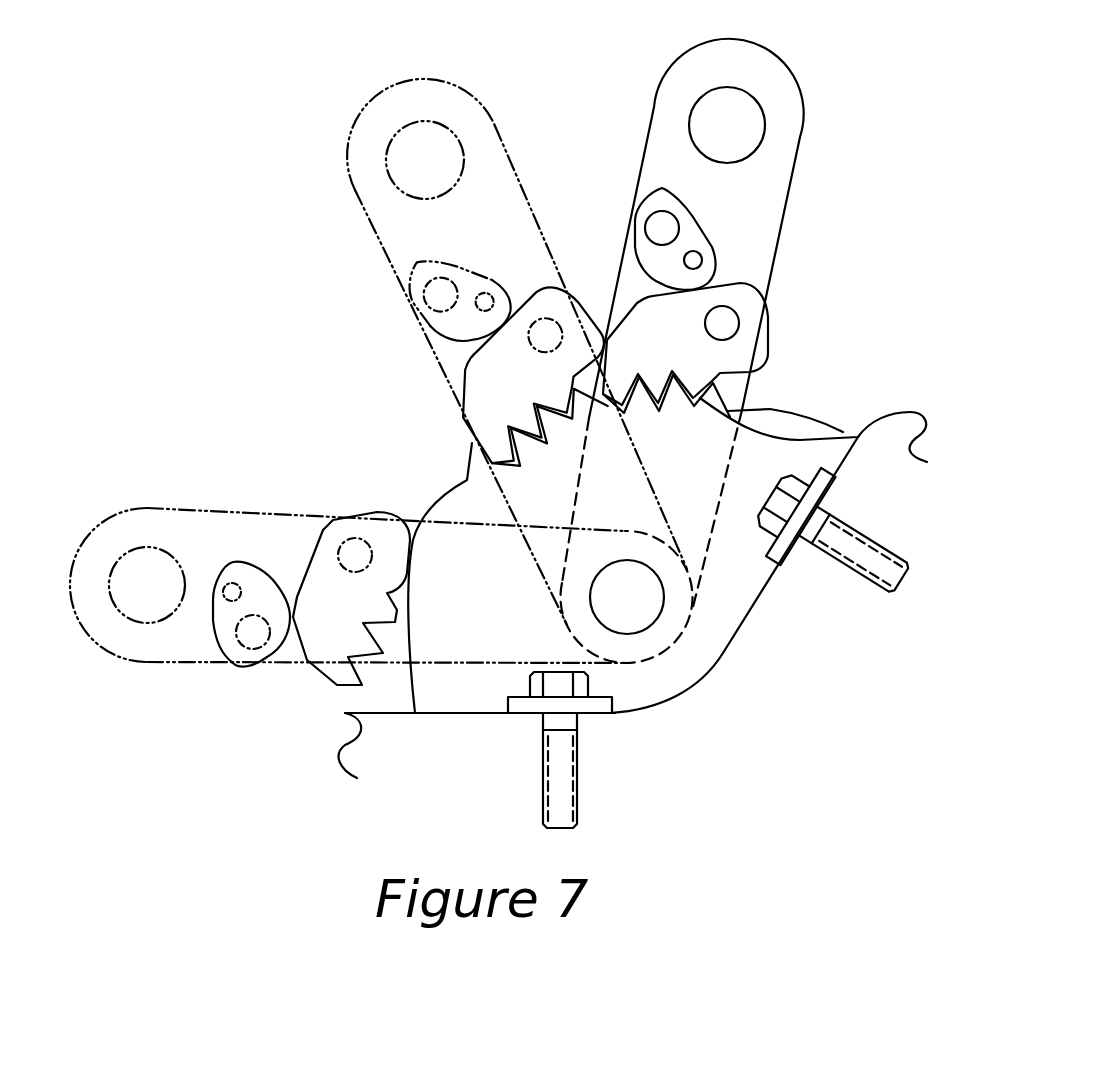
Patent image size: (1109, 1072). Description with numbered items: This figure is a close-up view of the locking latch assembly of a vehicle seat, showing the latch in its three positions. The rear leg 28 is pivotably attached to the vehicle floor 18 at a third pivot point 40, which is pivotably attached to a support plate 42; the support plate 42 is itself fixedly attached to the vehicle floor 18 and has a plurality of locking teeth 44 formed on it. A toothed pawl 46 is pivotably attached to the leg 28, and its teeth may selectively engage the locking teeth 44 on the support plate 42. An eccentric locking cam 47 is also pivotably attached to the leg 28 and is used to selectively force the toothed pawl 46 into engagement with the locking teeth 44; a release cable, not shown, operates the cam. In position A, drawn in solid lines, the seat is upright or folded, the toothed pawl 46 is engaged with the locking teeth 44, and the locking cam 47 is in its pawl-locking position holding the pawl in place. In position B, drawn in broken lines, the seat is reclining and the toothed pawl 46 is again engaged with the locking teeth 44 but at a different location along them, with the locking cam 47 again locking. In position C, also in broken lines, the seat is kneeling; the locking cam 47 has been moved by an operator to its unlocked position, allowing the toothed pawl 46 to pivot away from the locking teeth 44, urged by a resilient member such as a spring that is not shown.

The vehicle floor 18 is at (377, 752).
The rear leg 28 is at (778, 115).
The third pivot point 40 is at (627, 597).
The support plate 42 is at (745, 567).
The locking teeth 44 is at (858, 437).
The toothed pawl 46 is at (745, 347).
The locking cam 47 is at (690, 237).
The position A is at (657, 82).
The position B is at (363, 160).
The position C is at (93, 537).